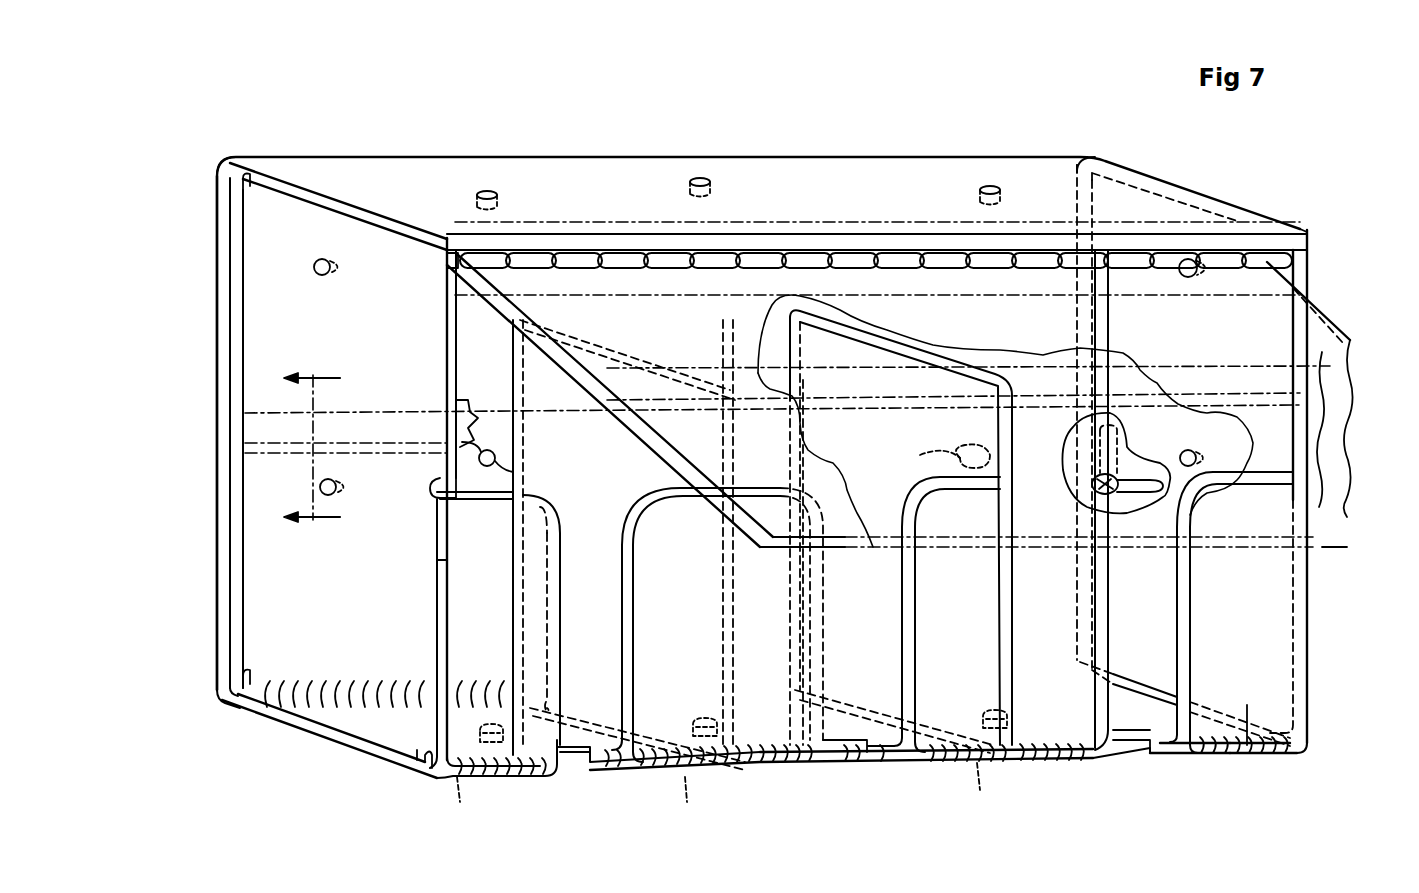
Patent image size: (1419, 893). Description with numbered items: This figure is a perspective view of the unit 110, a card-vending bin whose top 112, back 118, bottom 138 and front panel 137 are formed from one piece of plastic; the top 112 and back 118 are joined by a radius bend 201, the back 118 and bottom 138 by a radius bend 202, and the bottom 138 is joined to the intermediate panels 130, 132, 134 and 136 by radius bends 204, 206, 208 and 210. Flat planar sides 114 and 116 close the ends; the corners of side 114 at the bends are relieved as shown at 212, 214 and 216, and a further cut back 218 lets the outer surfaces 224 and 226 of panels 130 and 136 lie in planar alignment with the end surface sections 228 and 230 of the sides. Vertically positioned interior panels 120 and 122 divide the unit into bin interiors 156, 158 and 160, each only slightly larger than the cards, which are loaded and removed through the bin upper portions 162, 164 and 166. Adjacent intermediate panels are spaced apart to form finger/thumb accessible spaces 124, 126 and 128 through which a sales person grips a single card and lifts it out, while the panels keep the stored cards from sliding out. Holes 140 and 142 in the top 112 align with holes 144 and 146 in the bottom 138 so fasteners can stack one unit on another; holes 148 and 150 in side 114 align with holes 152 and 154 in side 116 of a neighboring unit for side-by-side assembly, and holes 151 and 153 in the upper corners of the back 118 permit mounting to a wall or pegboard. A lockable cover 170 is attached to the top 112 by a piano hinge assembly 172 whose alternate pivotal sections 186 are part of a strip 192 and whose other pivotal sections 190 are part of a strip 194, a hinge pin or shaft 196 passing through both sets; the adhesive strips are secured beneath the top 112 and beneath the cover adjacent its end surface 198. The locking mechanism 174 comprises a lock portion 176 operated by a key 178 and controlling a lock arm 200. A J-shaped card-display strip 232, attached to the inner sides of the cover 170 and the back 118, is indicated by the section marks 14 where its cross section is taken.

The side 14 is at (307, 450).
The unit 110 is at (318, 130).
The top 112 is at (405, 158).
The side 114 is at (270, 310).
The side 116 is at (1280, 643).
The back 118 is at (217, 393).
The interior panel 120 is at (520, 378).
The interior panel 122 is at (875, 405).
The finger/thumb accessible space 124 is at (592, 620).
The finger/thumb accessible space 126 is at (867, 640).
The finger/thumb accessible space 128 is at (1143, 647).
The intermediate panel 130 is at (477, 602).
The intermediate panel 132 is at (753, 723).
The intermediate panel 134 is at (1043, 730).
The intermediate panel 136 is at (1250, 745).
The front panel 137 is at (430, 571).
The bottom 138 is at (380, 730).
The hole 140 is at (487, 190).
The hole 142 is at (700, 178).
The hole 144 is at (726, 777).
The hole 146 is at (695, 779).
The hole 148 is at (315, 266).
The hole 150 is at (320, 486).
The hole 151 is at (495, 462).
The hole 152 is at (1200, 277).
The hole 153 is at (923, 465).
The hole 154 is at (1210, 453).
The bin interior 156 is at (583, 527).
The bin interior 158 is at (862, 547).
The bin interior 160 is at (1148, 603).
The bin upper portion 162 is at (477, 360).
The bin upper portion 164 is at (603, 303).
The bin upper portion 166 is at (977, 287).
The lockable cover 170 is at (1323, 303).
The piano hinge assembly 172 is at (858, 243).
The locking mechanism 174 is at (1093, 483).
The lock portion 176 is at (1098, 493).
The key 178 is at (1112, 470).
The alternate pivotal sections 186 is at (540, 265).
The alternate pivotal sections 190 is at (580, 257).
The hinge strip 192 is at (453, 263).
The hinge strip 194 is at (475, 262).
The hinge pin or shaft 196 is at (473, 258).
The cover end surface 198 is at (453, 263).
The lock arm 200 is at (1178, 528).
The radius bend 201 is at (217, 170).
The radius bend 202 is at (223, 700).
The radius bend 204 is at (507, 773).
The radius bend 206 is at (660, 753).
The radius bend 208 is at (1080, 757).
The radius bend 210 is at (1217, 757).
The relieved corner 212 is at (230, 197).
The relieved corner 214 is at (223, 685).
The relieved corner 216 is at (423, 757).
The cut back 218 is at (433, 490).
The outer surface 224 is at (470, 517).
The outer surface 226 is at (1270, 523).
The end surface section 228 is at (445, 368).
The end surface section 230 is at (1302, 273).
The strip 232 is at (233, 430).